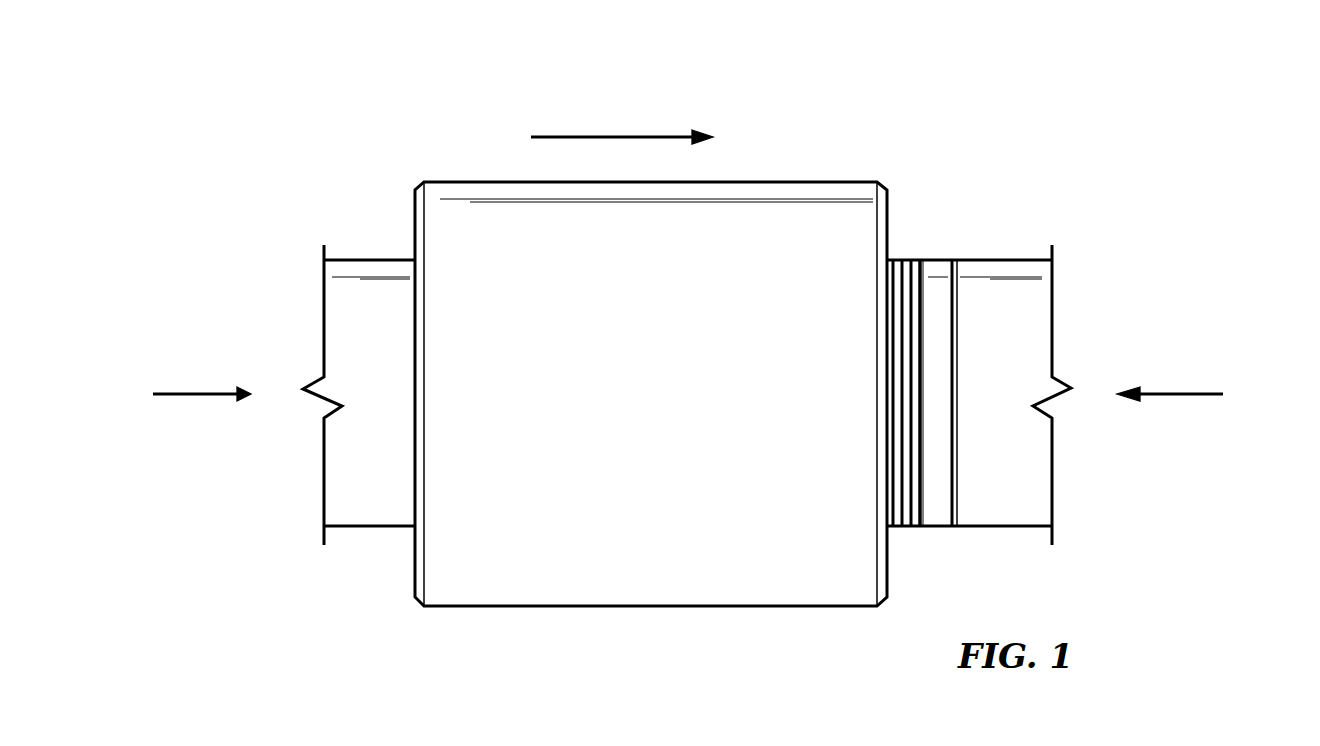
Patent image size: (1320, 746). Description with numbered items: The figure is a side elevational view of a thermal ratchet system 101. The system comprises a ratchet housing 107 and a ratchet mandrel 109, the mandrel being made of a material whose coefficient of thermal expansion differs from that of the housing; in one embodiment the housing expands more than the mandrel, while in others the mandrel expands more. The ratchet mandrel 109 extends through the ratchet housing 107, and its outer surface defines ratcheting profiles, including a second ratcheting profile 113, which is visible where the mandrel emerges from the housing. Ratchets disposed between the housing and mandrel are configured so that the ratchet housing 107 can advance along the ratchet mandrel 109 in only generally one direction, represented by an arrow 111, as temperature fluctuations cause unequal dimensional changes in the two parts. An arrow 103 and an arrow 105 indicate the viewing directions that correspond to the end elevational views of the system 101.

The thermal ratchet system 101 is at (874, 133).
The arrow 103 is at (175, 394).
The arrow 105 is at (1160, 394).
The ratchet housing 107 is at (418, 182).
The ratchet mandrel 109 is at (370, 526).
The arrow 111 is at (573, 137).
The second ratcheting profile 113 is at (900, 513).